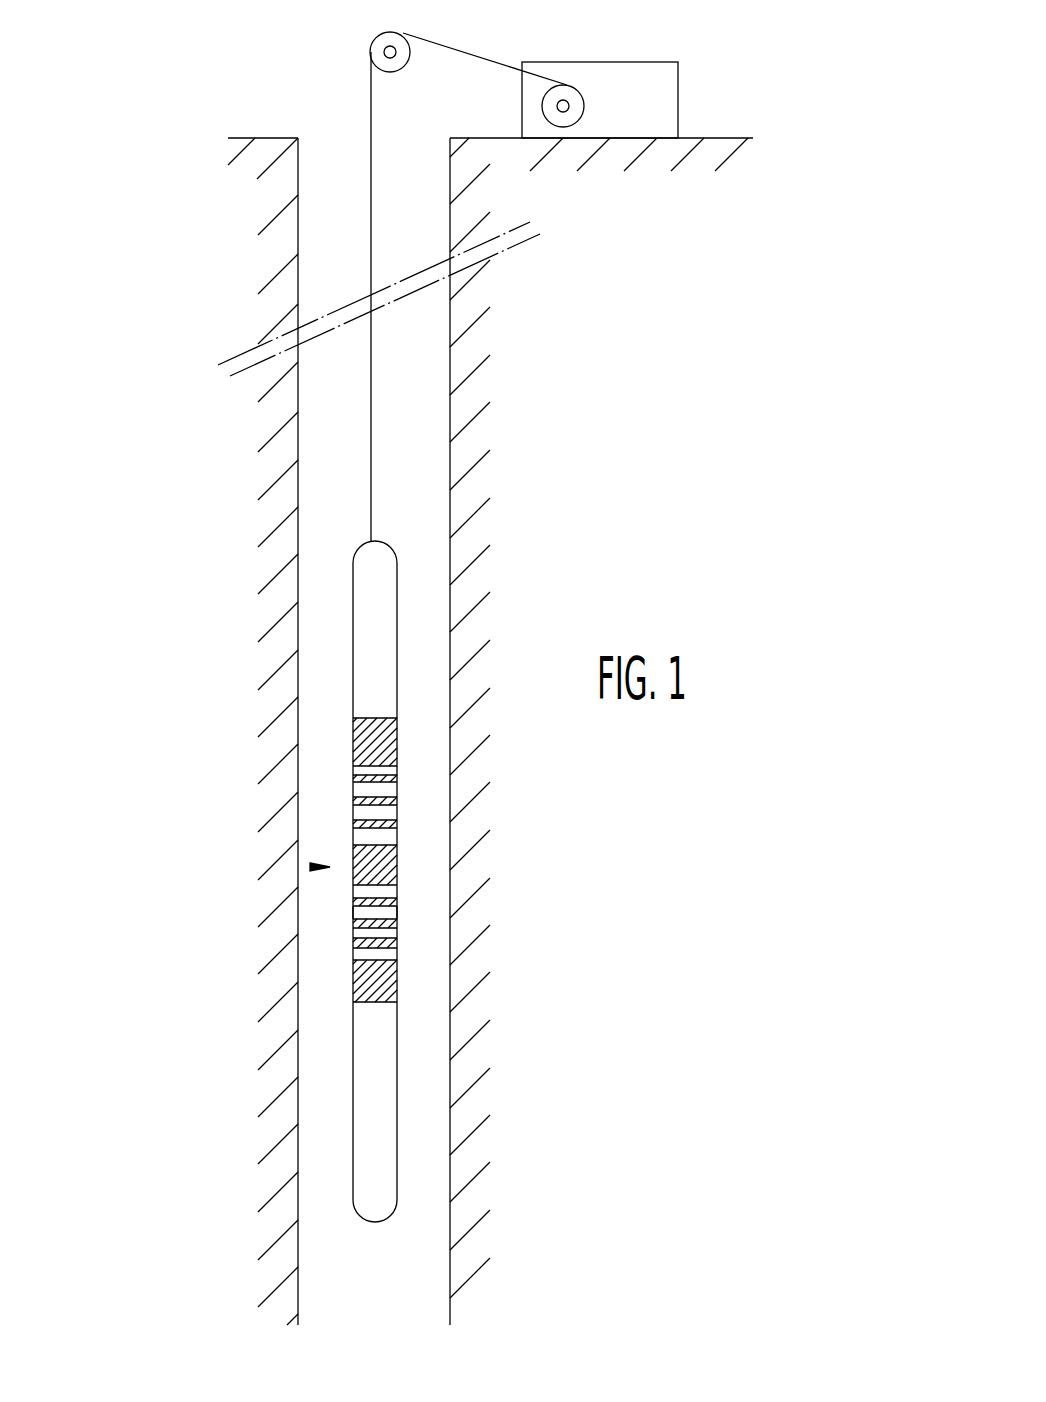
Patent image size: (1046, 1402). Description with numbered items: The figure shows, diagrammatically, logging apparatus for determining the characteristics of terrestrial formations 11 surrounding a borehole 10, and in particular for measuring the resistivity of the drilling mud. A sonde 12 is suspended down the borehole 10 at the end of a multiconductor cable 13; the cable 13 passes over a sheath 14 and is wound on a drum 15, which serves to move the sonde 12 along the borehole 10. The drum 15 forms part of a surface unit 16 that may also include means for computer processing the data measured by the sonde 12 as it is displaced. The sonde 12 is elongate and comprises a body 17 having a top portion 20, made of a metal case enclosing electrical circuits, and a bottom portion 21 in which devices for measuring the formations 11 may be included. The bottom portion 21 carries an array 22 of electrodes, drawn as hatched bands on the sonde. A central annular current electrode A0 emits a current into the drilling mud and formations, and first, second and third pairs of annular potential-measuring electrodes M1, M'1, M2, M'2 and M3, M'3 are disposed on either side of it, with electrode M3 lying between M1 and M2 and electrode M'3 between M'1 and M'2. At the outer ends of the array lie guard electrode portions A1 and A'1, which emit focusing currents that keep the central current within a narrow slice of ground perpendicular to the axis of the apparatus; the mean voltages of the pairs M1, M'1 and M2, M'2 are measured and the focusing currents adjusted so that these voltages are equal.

The borehole 10 is at (298, 472).
The terrestrial formations 11 is at (468, 314).
The sonde 12 is at (379, 862).
The multiconductor cable 13 is at (372, 372).
The sheath 14 is at (368, 48).
The drum 15 is at (570, 86).
The surface unit 16 is at (672, 83).
The body 17 is at (353, 910).
The top portion 20 is at (353, 648).
The bottom portion 21 is at (363, 1070).
The array of electrodes 22 is at (312, 867).
The guard electrode portion A1 is at (387, 733).
The central annular current electrode A0 is at (358, 863).
The guard electrode portion A'1 is at (399, 999).
The annular potential-measuring electrode M1 is at (390, 827).
The annular potential-measuring electrode M2 is at (390, 780).
The annular potential-measuring electrode M3 is at (355, 799).
The annular potential-measuring electrode M'1 is at (403, 879).
The annular potential-measuring electrode M'2 is at (351, 966).
The annular potential-measuring electrode M'3 is at (403, 941).